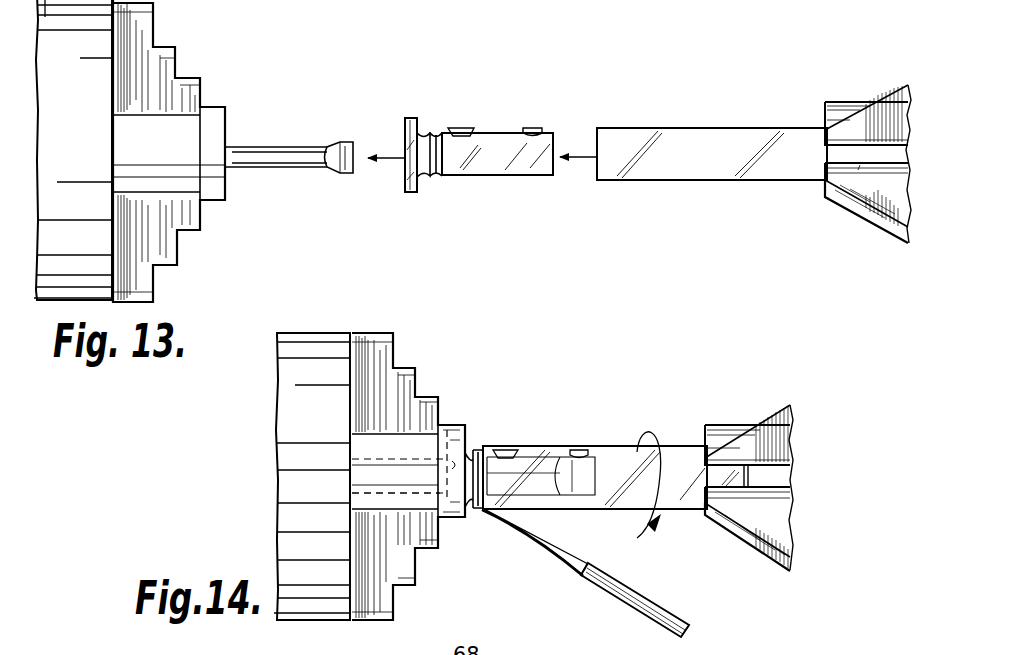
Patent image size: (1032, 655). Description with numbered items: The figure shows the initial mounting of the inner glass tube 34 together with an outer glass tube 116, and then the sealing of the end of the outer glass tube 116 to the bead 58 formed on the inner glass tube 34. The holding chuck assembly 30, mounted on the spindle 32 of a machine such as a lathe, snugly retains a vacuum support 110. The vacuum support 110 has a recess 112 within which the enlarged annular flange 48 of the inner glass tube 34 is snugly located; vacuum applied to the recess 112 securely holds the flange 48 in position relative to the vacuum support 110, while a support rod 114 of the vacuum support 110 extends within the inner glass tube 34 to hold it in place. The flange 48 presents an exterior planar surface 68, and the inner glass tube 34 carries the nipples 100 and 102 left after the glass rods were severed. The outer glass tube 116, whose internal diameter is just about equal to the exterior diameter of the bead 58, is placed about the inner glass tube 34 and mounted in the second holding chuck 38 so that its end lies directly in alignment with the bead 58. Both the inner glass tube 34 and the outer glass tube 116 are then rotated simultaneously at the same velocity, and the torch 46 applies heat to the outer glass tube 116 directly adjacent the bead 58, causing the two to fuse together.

In FIG. 13, the holding chuck assembly 30 is at (180, 60).
In FIG. 14, the holding chuck assembly 30 is at (400, 347).
In FIG. 14, the spindle 32 is at (277, 445).
In FIG. 13, the inner glass tube 34 is at (542, 178).
In FIG. 14, the inner glass tube 34 is at (603, 509).
In FIG. 13, the second holding chuck 38 is at (853, 215).
In FIG. 14, the second holding chuck 38 is at (797, 444).
In FIG. 14, the torch 46 is at (637, 610).
In FIG. 13, the enlarged annular flange 48 is at (408, 118).
In FIG. 14, the enlarged annular flange 48 is at (460, 422).
In FIG. 13, the bead 58 is at (432, 128).
In FIG. 14, the bead 58 is at (478, 443).
In FIG. 13, the exterior planar surface 68 is at (400, 180).
In FIG. 14, the exterior planar surface 68 is at (352, 493).
In FIG. 13, the nipple 100 is at (535, 128).
In FIG. 14, the nipple 100 is at (587, 448).
In FIG. 13, the nipple 102 is at (468, 128).
In FIG. 14, the nipple 102 is at (542, 446).
In FIG. 13, the vacuum support 110 is at (226, 190).
In FIG. 14, the vacuum support 110 is at (452, 418).
In FIG. 14, the recess 112 is at (352, 459).
In FIG. 13, the support rod 114 is at (265, 148).
In FIG. 14, the support rod 114 is at (518, 488).
In FIG. 13, the outer glass tube 116 is at (697, 128).
In FIG. 14, the outer glass tube 116 is at (688, 446).